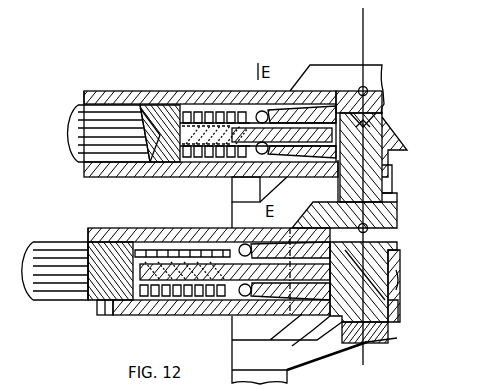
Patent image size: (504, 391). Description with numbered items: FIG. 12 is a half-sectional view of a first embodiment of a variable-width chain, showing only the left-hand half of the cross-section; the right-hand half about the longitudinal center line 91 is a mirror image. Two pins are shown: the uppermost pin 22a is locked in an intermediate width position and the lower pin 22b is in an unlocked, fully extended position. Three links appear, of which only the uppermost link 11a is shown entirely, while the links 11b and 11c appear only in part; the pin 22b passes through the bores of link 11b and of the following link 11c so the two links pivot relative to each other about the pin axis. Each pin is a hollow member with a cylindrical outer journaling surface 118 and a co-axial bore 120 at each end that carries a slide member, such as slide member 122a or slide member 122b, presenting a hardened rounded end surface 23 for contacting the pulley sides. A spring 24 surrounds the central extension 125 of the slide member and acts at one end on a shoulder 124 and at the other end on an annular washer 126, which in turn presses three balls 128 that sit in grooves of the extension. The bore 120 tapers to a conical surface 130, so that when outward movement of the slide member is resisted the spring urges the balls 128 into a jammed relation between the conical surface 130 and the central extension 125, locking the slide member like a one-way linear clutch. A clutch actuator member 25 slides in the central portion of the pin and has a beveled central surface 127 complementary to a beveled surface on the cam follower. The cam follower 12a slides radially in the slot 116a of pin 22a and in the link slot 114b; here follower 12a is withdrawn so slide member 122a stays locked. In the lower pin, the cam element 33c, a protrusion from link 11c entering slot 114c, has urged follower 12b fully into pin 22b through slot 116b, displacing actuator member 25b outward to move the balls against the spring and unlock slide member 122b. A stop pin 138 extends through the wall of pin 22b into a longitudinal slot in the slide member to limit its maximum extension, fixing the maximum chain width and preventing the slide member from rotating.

The cylindrical outer journaling surface 118 is at (84, 93).
The rounded end surface 23 is at (66, 128).
The slide member 122a is at (140, 108).
The pin 22a is at (138, 91).
The shoulder 124 is at (196, 112).
The central extension 125 is at (204, 114).
The spring 24 is at (212, 112).
The bore 120 is at (244, 128).
The conical surface 130 is at (262, 111).
The balls 128 is at (272, 110).
The clutch actuator member 25 is at (340, 113).
The longitudinal center line 91 is at (368, 30).
The link 11a is at (376, 78).
The beveled central surface 127 is at (370, 127).
The cam follower 12a is at (384, 148).
The slot 116a is at (392, 172).
The slot 114b is at (397, 196).
The link 11b is at (398, 224).
The cam follower 12b is at (398, 258).
The slot 116b is at (398, 278).
The slot 114c is at (398, 302).
The cam element 33c is at (390, 324).
The link 11c is at (375, 344).
The clutch actuator member 25b is at (313, 330).
The annular washer 126 is at (232, 180).
The pin 22b is at (100, 228).
The slide member 122b is at (100, 276).
The stop pin 138 is at (110, 315).